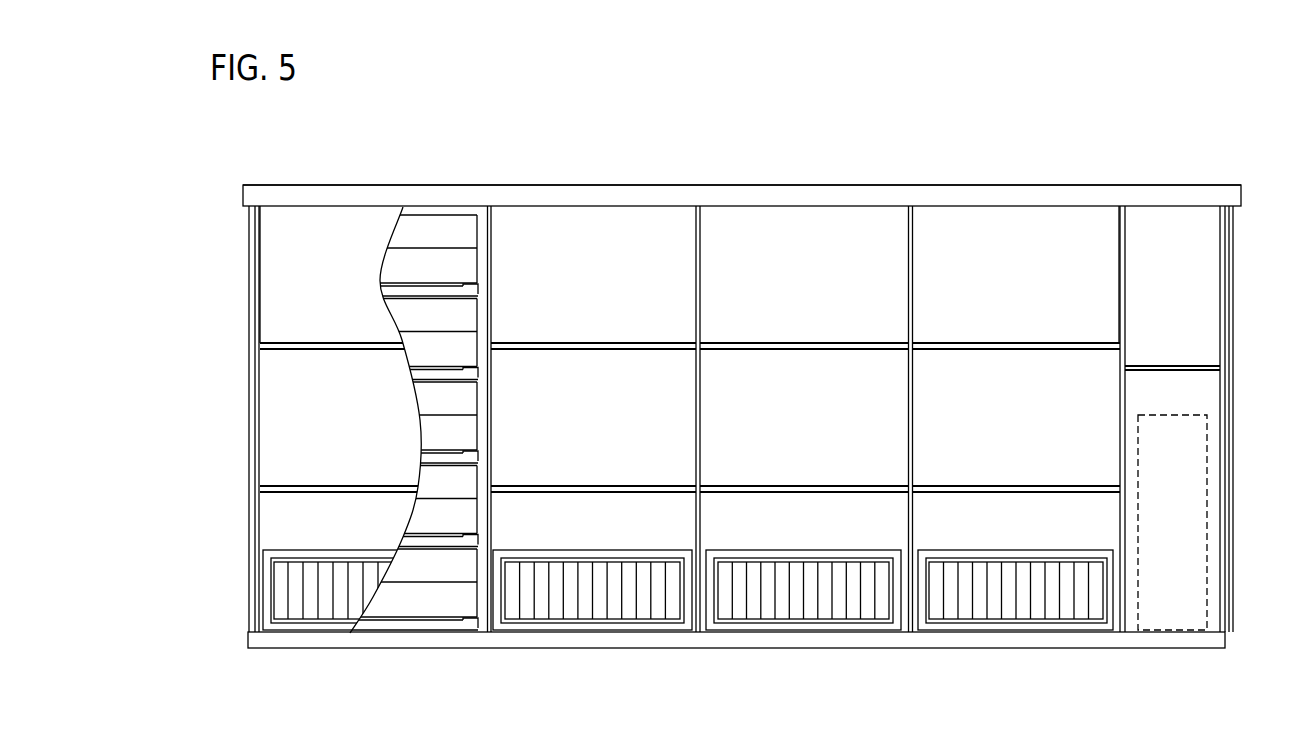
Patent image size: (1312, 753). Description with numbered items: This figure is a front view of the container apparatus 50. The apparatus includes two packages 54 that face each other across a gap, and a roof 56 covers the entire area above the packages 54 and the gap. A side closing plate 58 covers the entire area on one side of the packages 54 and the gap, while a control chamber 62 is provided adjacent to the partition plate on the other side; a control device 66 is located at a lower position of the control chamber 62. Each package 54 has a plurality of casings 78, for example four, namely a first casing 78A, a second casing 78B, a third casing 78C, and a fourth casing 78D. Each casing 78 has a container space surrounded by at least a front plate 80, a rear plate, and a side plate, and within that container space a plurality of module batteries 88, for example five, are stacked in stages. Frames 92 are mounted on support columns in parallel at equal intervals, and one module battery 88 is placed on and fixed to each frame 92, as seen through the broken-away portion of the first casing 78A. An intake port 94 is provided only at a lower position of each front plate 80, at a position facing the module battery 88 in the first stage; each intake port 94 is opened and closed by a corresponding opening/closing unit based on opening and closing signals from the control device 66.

The container apparatus 50 is at (418, 115).
The package 54 is at (1141, 180).
The roof 56 is at (677, 186).
The side closing plate 58 is at (247, 400).
The control chamber 62 is at (1244, 282).
The control device 66 is at (1212, 511).
The casing 78 is at (692, 386).
The first casing 78A is at (303, 206).
The second casing 78B is at (561, 214).
The third casing 78C is at (801, 214).
The fourth casing 78D is at (1036, 214).
The front plate 80 is at (960, 225).
The module battery 88 is at (411, 604).
The frame 92 is at (452, 630).
The intake port 94 is at (313, 600).